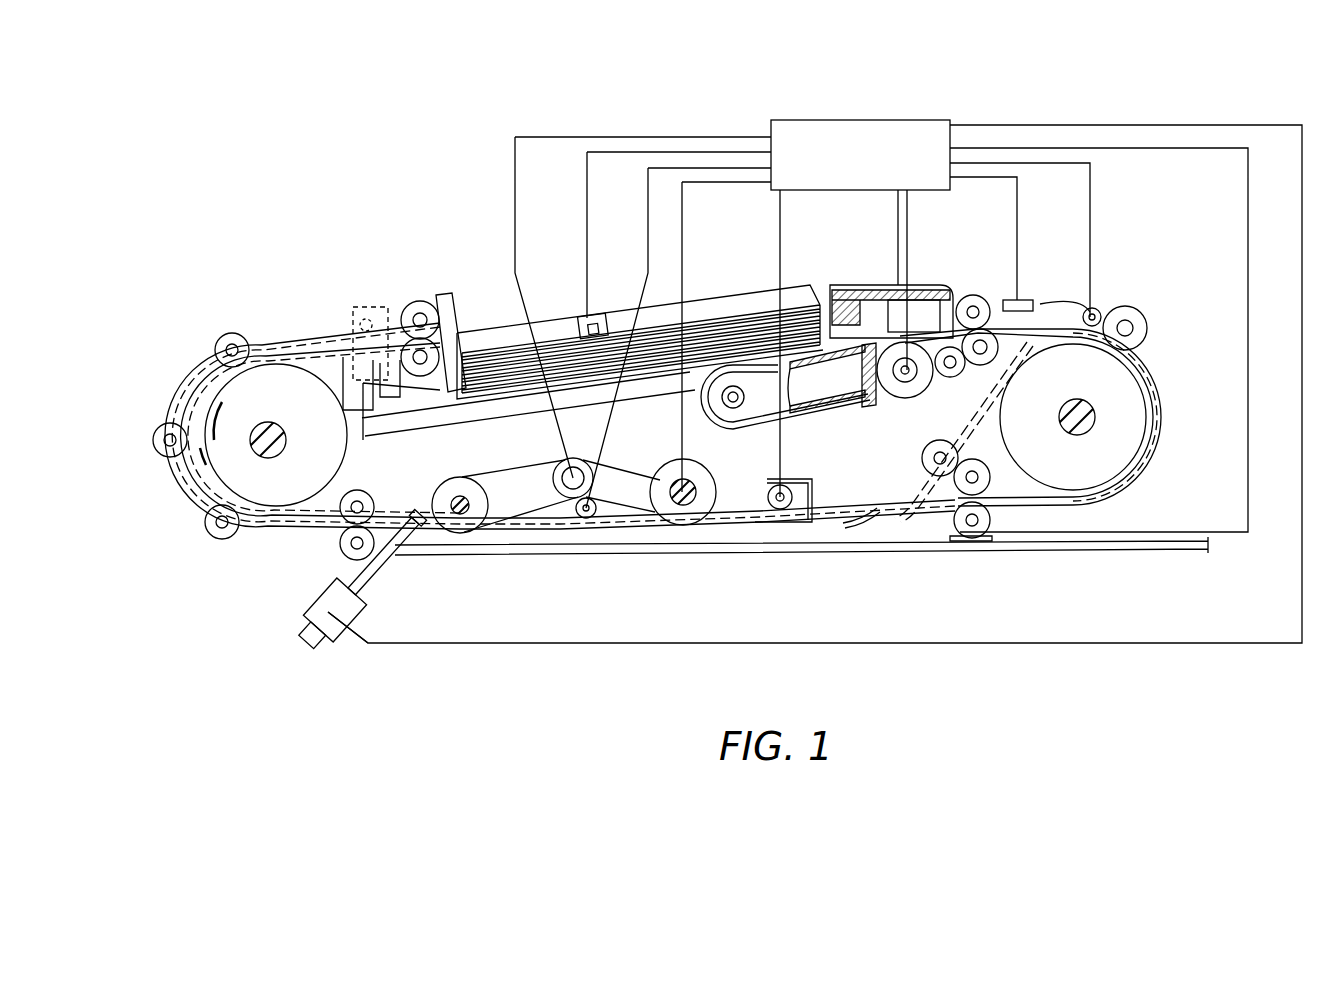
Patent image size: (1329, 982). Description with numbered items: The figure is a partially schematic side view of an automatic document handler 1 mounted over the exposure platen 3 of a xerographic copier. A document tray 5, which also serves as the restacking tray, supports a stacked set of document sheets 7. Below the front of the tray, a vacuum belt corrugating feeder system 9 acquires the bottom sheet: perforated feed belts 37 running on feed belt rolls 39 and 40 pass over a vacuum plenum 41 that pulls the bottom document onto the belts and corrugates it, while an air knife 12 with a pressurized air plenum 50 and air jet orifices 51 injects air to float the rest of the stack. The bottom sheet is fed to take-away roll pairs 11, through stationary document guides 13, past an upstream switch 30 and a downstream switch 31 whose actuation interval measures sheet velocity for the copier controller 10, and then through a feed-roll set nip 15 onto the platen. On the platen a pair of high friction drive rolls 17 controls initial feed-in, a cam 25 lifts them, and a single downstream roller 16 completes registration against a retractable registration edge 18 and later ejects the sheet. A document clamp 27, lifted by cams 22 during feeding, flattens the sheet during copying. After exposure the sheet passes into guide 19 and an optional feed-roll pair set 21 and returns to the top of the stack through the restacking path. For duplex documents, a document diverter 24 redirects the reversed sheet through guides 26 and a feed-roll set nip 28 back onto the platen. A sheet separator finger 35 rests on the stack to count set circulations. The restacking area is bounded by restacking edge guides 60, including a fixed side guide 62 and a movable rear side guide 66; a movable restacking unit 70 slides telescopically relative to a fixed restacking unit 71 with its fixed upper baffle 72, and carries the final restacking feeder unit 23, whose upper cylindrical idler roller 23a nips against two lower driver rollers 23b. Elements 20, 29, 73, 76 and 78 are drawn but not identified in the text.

The automatic document handler 1 is at (576, 292).
The exposure platen 3 is at (601, 540).
The document tray 5 is at (512, 400).
The document sheets 7 is at (703, 308).
The vacuum belt corrugating feeder system 9 is at (857, 430).
The copier controller 10 is at (937, 122).
The take-away roll pairs 11 is at (976, 294).
The air knife 12 is at (860, 284).
The document guides 13 is at (1132, 308).
The feed-roll set nip 15 is at (992, 512).
The single downstream roller 16 is at (440, 498).
The pair of high friction drive rolls 17 is at (700, 476).
The retractable registration edge 18 is at (412, 532).
The guide 19 is at (300, 527).
The roller 20 is at (576, 466).
The feed-roll pair set 21 is at (340, 528).
The cams 22 is at (768, 497).
The final restacking feeder unit 23 is at (356, 330).
The upper cylindrical idler roller 23a is at (424, 302).
The lower driver rollers 23b is at (427, 368).
The document diverter 24 is at (1098, 310).
The cam 25 is at (596, 516).
The guides 26 is at (992, 437).
The document clamp 27 is at (840, 520).
The feed-roll set nip 28 is at (922, 484).
The belt 29 is at (530, 533).
The upstream switch 30 is at (1030, 298).
The downstream switch 31 is at (980, 542).
The sheet separator finger 35 is at (586, 328).
The feed belts 37 is at (758, 432).
The feed belt roll 39 is at (714, 404).
The feed belt roll 40 is at (915, 398).
The vacuum plenum 41 is at (866, 410).
The pressurized air plenum 50 is at (920, 300).
The air jet orifices 51 is at (826, 379).
The restacking edge guides 60 is at (630, 290).
The fixed side guide 62 is at (736, 300).
The movable rear side guide 66 is at (452, 330).
The movable restacking unit 70 is at (450, 284).
The fixed restacking unit 71 is at (246, 330).
The fixed upper baffle 72 is at (288, 343).
The belt 73 is at (318, 358).
The guide 76 is at (205, 404).
The roller 78 is at (222, 337).